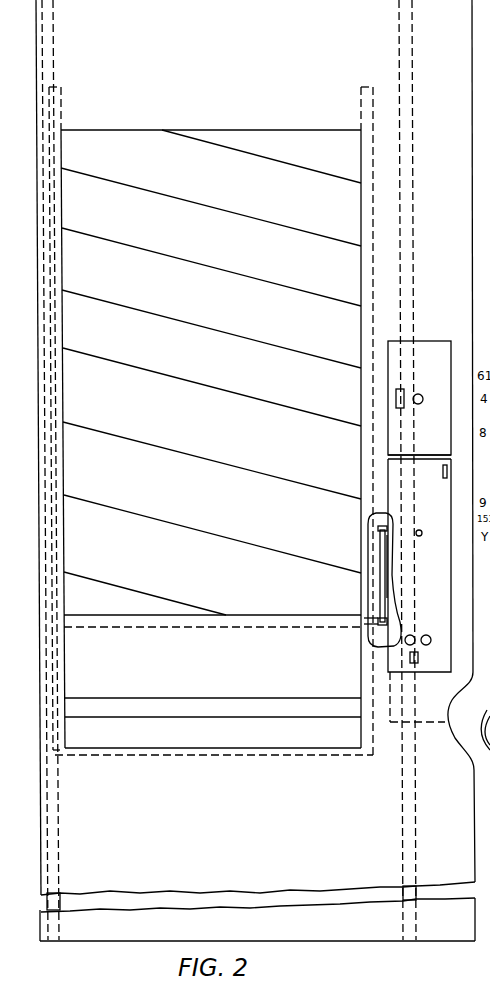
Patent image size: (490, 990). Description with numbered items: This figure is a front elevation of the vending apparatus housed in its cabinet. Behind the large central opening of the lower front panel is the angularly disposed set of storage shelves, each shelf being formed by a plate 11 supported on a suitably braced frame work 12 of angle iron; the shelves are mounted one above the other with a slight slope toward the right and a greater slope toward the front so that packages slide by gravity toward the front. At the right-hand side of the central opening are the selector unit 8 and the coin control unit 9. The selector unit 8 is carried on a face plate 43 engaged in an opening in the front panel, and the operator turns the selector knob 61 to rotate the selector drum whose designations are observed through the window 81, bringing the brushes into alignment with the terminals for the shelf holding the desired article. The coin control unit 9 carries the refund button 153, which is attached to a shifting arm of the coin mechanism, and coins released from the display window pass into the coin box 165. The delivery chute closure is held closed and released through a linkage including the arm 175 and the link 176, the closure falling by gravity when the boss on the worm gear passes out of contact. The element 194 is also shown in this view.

The plate 11 is at (240, 395).
The frame work 12 is at (55, 68).
The face plate 43 is at (420, 341).
The selector unit 8 is at (438, 390).
The window 81 is at (404, 392).
The selector knob 61 is at (421, 405).
The coin control unit 9 is at (440, 542).
The refund button 153 is at (421, 530).
The arm 175 is at (368, 532).
The link 176 is at (370, 588).
The latch 194 is at (366, 625).
The coin box 165 is at (433, 725).